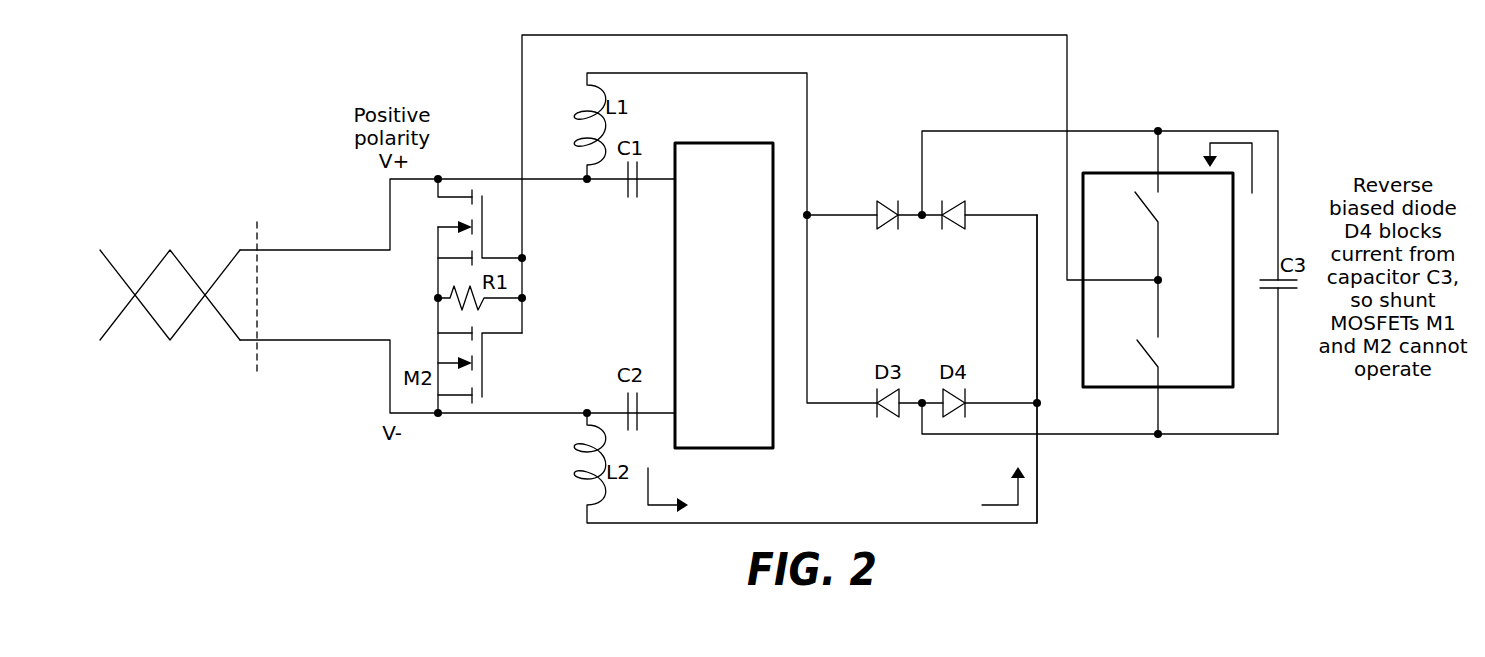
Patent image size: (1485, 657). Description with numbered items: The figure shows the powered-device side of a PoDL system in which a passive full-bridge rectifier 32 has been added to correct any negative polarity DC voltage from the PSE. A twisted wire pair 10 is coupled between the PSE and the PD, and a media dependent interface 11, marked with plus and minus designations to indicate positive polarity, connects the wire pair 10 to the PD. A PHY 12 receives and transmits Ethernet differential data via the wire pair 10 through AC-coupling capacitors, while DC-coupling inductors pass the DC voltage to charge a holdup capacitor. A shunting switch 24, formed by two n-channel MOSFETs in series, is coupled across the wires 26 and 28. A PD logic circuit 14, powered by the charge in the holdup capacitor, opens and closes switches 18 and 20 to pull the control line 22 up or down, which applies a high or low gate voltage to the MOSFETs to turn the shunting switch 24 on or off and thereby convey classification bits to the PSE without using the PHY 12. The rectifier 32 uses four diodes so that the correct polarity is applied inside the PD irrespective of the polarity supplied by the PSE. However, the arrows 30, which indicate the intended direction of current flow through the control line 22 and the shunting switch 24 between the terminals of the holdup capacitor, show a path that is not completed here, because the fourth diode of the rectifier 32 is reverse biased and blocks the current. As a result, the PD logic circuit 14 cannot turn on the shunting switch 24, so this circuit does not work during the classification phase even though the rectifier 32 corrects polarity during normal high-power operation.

The twisted wire pair 10 is at (153, 342).
The media dependent interface 11 is at (257, 352).
The PHY 12 is at (747, 143).
The PD logic circuit 14 is at (1147, 173).
The switch 18 is at (1158, 198).
The switch 20 is at (1143, 358).
The control line 22 is at (895, 35).
The shunting switch 24 is at (495, 202).
The wire 26 is at (225, 268).
The wire 28 is at (225, 328).
The arrows 30 is at (655, 490).
The full-bridge rectifier 32 is at (883, 158).